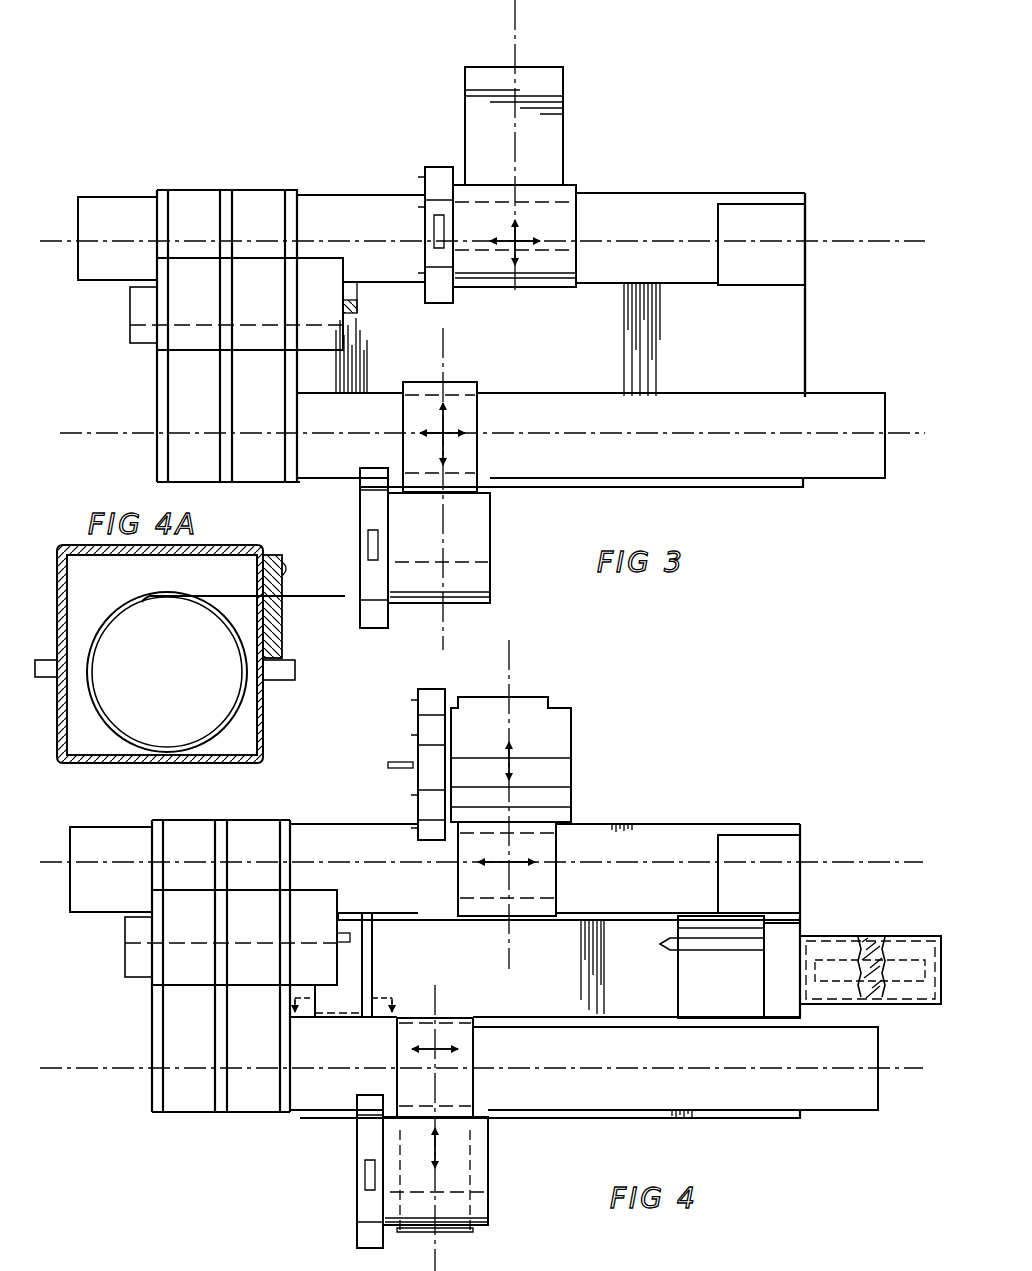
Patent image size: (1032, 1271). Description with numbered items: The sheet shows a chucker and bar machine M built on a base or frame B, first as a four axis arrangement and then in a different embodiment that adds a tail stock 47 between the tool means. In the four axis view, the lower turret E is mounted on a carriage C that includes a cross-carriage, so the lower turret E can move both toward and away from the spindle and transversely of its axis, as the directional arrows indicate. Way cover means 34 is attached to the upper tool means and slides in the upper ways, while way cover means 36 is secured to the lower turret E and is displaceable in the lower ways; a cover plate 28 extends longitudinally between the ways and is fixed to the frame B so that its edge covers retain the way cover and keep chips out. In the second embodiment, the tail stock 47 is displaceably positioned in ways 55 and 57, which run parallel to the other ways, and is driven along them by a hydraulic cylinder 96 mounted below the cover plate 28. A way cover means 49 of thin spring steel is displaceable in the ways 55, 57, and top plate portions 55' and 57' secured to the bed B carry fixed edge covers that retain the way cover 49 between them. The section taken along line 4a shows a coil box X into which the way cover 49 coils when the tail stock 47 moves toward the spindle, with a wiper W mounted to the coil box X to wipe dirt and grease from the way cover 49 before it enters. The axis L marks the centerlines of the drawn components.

In FIG. 3, the way cover means 34 is at (366, 236).
In FIG. 4, the way cover means 34 is at (386, 865).
In FIG. 3, the way cover means 36 is at (654, 467).
In FIG. 4, the way cover means 36 is at (624, 1059).
In FIG. 3, the cover plate 28 is at (786, 332).
In FIG. 4A, the way cover means 49 is at (317, 596).
In FIG. 4, the way cover means 49 is at (544, 988).
In FIG. 4, the tail stock 47 is at (692, 946).
In FIG. 4, the way 55 is at (806, 1019).
In FIG. 4, the top plate portion 55' is at (636, 1000).
In FIG. 4, the way 57 is at (797, 960).
In FIG. 4, the top plate portion 57' is at (569, 901).
In FIG. 4, the hydraulic cylinder 96 is at (818, 952).
In FIG. 4, the section line 4a is at (343, 1032).
In FIG. 3, the axis L is at (516, 36).
In FIG. 4, the axis L is at (510, 660).
In FIG. 3, the chucker and bar machine M is at (610, 170).
In FIG. 4, the chucker and bar machine M is at (618, 784).
In FIG. 3, the carriage C is at (462, 453).
In FIG. 3, the lower turret E is at (478, 550).
In FIG. 4, the lower turret E is at (465, 1175).
In FIG. 3, the base B is at (722, 490).
In FIG. 4, the base B is at (692, 1121).
In FIG. 4A, the wiper W is at (282, 553).
In FIG. 4A, the coil box X is at (273, 713).
In FIG. 4, the coil box X is at (400, 945).